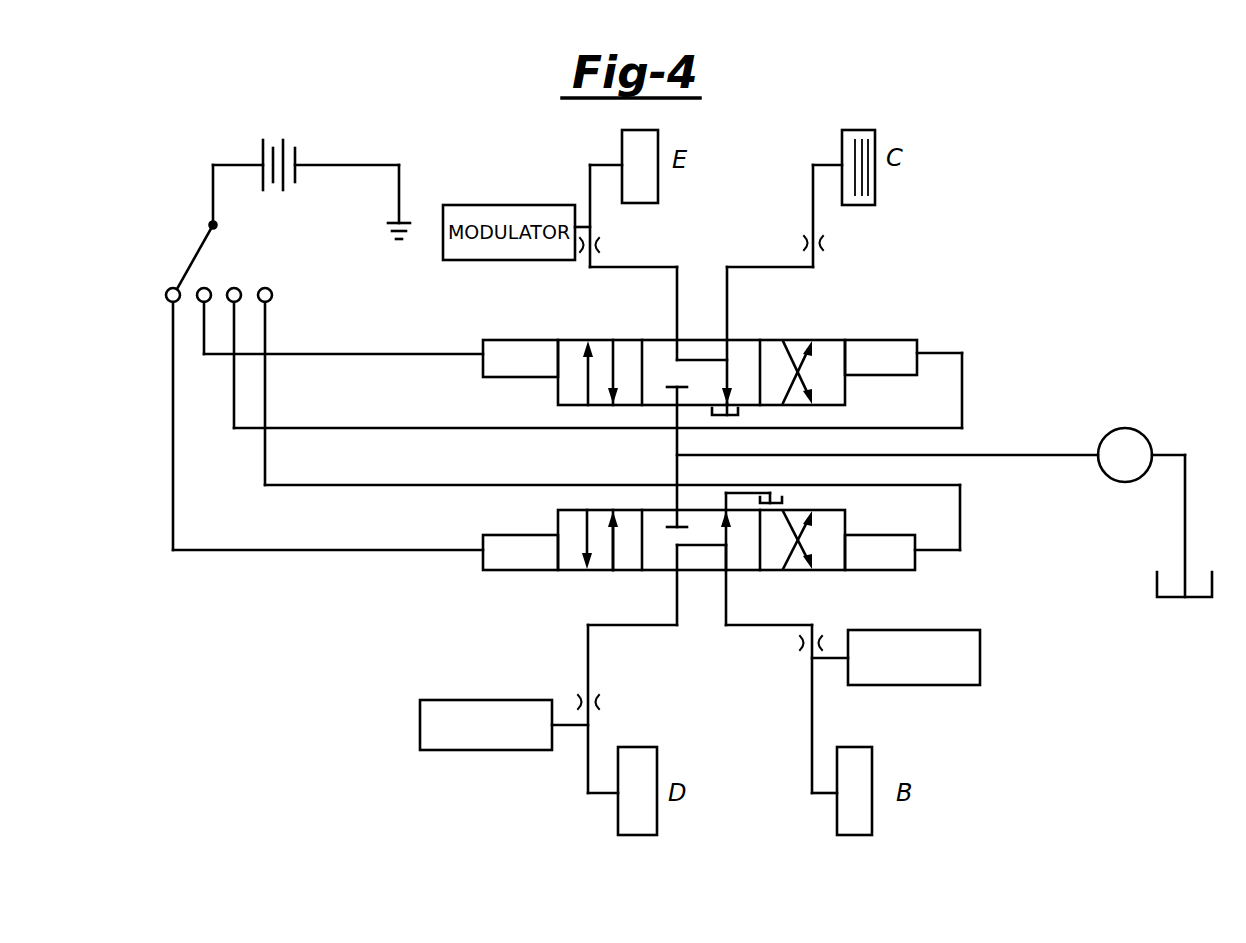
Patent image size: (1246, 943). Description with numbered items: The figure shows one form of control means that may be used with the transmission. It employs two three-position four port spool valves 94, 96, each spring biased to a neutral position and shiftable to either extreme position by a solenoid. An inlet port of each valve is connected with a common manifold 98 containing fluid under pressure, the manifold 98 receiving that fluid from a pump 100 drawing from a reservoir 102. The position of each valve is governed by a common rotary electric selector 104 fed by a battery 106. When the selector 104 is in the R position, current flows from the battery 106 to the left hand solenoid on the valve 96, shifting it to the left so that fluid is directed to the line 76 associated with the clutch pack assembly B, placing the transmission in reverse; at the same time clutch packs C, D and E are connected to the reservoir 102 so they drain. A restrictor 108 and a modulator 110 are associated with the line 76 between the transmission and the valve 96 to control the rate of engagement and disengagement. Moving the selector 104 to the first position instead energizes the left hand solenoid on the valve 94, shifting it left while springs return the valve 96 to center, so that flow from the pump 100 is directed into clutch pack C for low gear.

The line 76 is at (812, 735).
The three-position four port valve 94 is at (579, 340).
The three-position four port valve 96 is at (575, 510).
The common manifold 98 is at (1023, 413).
The pump 100 is at (1140, 433).
The reservoir 102 is at (1157, 581).
The rotary electric selector 104 is at (190, 243).
The battery 106 is at (303, 147).
The restrictor 108 is at (825, 642).
The modulator 110 is at (980, 655).